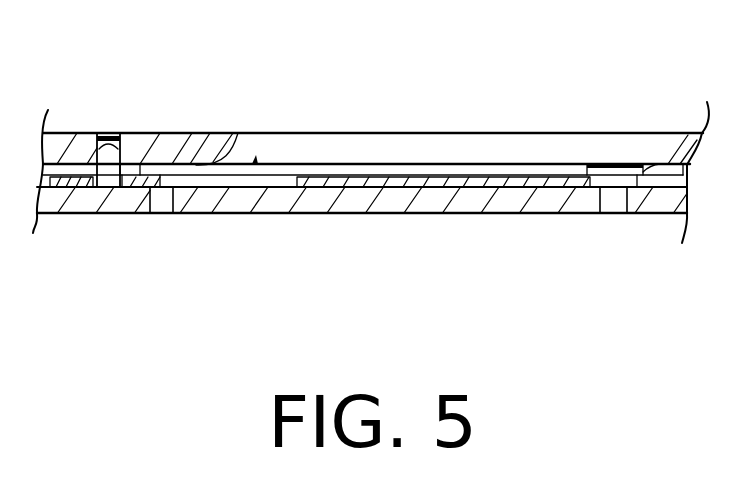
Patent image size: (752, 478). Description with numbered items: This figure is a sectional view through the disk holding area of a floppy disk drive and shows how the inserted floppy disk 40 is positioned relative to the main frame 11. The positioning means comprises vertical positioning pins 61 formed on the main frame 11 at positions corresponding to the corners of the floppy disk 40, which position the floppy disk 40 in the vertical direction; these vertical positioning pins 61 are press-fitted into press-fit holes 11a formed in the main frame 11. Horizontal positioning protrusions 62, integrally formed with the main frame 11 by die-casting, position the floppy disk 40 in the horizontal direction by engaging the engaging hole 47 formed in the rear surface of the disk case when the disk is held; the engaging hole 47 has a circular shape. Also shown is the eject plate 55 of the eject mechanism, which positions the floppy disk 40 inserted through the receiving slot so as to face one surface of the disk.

The main frame 11 is at (420, 213).
The press-fit hole 11a is at (167, 213).
The floppy disk 40 is at (425, 133).
The engaging hole 47 is at (140, 133).
The eject plate 55 is at (522, 213).
The vertical positioning pin 61 is at (256, 160).
The horizontal positioning protrusion 62 is at (63, 213).